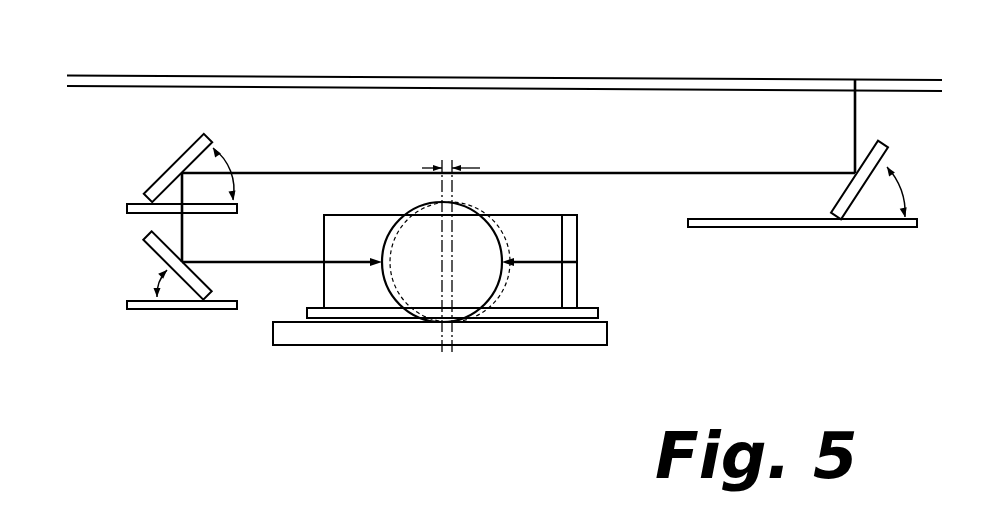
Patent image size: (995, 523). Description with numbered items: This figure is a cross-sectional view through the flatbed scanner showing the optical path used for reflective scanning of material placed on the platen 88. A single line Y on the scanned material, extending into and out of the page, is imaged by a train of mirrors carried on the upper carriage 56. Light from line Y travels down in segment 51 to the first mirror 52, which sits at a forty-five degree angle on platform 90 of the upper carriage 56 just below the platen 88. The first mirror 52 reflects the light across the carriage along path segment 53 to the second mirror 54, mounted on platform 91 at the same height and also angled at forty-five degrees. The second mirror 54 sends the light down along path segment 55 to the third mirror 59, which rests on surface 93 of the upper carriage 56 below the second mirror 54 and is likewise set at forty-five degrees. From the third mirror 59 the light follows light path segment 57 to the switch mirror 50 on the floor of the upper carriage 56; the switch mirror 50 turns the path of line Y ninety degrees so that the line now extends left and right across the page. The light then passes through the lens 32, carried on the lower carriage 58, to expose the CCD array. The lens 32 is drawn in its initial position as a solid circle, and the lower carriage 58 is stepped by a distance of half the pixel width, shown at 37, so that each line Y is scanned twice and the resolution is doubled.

The lens 32 is at (472, 283).
The distance M/2 37 is at (457, 146).
The switch mirror 50 is at (543, 237).
The path segment 51 is at (858, 113).
The first mirror 52 is at (882, 153).
The path segment 53 is at (647, 173).
The second mirror 54 is at (185, 157).
The path segment 55 is at (185, 232).
The upper carriage 56 is at (593, 308).
The light path segment 57 is at (243, 263).
The lower carriage 58 is at (320, 332).
The third mirror 59 is at (188, 280).
The platen 88 is at (695, 78).
The platform 90 is at (788, 230).
The platform 91 is at (128, 212).
The surface 93 is at (218, 305).
The line Y is at (857, 79).